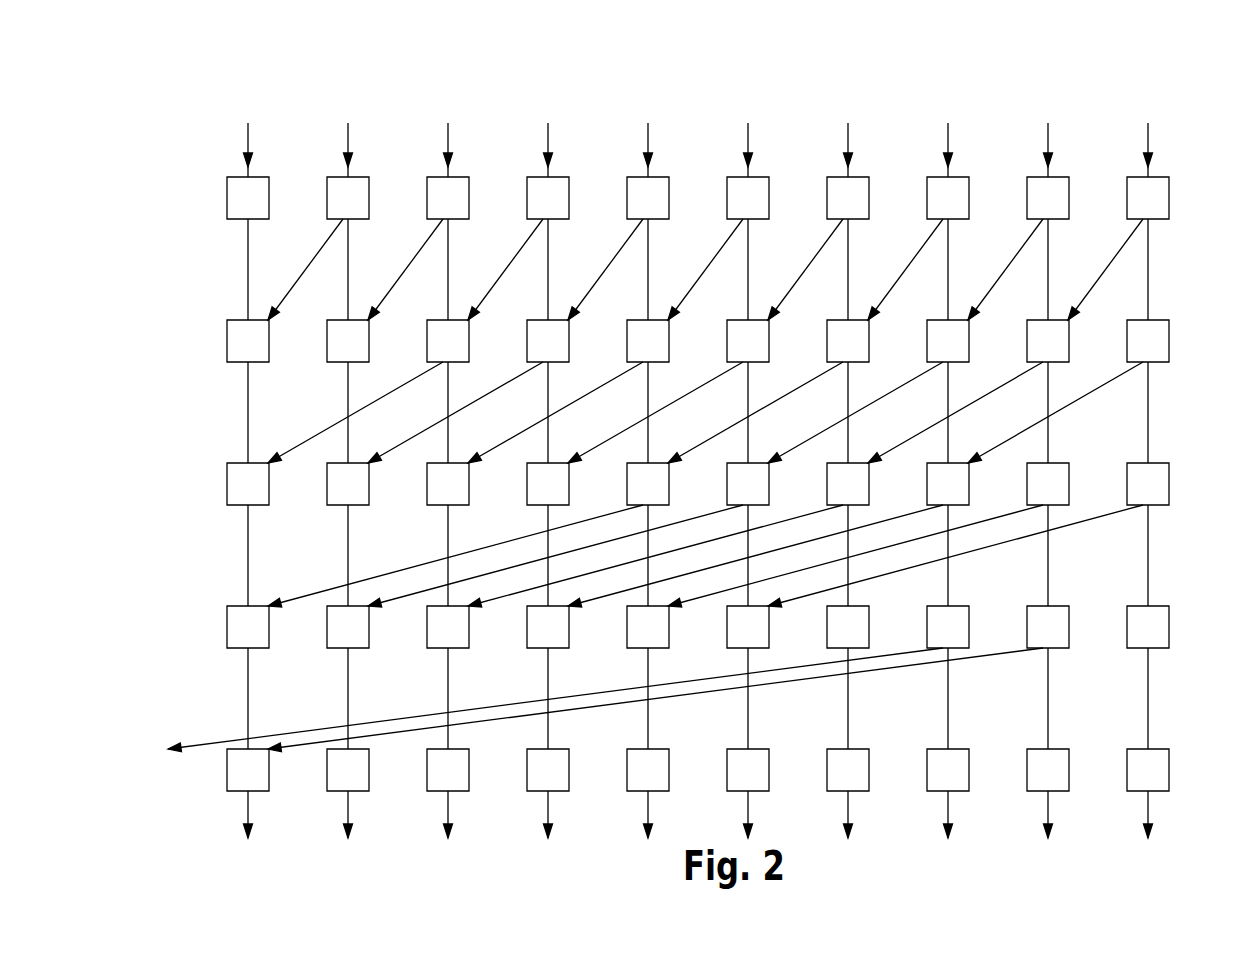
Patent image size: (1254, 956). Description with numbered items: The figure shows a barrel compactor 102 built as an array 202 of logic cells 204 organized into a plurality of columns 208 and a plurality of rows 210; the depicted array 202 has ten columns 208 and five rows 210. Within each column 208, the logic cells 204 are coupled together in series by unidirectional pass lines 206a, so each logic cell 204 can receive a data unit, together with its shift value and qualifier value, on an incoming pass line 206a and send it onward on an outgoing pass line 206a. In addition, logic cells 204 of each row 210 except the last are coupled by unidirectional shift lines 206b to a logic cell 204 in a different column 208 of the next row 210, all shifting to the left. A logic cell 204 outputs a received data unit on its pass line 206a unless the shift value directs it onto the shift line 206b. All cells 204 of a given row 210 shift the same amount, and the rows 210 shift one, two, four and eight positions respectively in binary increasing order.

The barrel compactor 102 is at (1178, 86).
The array 202 is at (227, 137).
The logic cell 204 is at (226, 197).
The pass line 206a is at (348, 136).
The shift line 206b is at (413, 377).
The column 208 is at (298, 429).
The row 210 is at (826, 484).